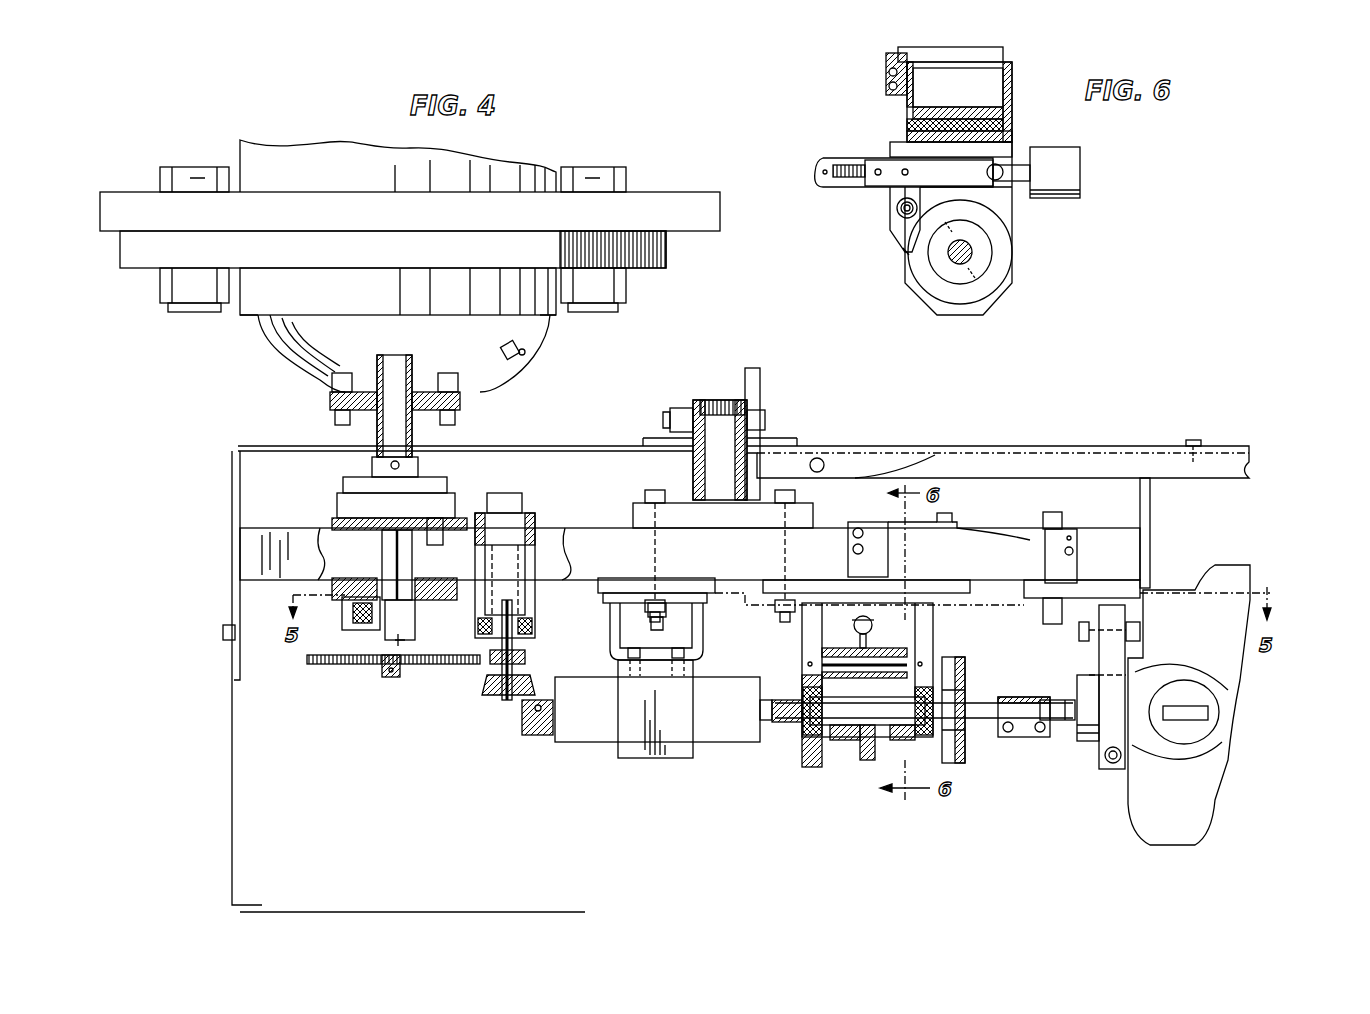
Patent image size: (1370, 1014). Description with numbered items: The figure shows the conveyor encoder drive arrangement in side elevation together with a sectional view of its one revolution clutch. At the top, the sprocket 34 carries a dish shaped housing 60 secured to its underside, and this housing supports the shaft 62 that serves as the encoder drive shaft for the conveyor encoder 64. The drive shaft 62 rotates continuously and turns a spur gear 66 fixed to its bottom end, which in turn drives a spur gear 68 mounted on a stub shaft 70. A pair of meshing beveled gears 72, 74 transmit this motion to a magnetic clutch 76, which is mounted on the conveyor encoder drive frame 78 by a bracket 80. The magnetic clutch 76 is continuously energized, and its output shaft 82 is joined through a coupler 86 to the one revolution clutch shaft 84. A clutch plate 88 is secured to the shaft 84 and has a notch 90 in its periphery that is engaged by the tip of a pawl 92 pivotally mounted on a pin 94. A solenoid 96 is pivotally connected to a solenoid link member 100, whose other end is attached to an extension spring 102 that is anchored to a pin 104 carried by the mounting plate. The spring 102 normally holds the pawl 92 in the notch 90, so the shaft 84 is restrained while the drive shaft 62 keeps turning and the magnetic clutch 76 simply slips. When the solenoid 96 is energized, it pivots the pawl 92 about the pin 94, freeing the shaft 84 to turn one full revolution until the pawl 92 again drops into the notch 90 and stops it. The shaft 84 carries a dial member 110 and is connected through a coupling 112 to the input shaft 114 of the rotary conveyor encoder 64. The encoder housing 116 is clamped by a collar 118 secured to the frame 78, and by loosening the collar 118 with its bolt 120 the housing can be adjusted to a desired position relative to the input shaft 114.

In FIG. 4, the sprocket 34 is at (640, 212).
In FIG. 4, the dish shaped housing 60 is at (488, 387).
In FIG. 4, the shaft 62 is at (395, 420).
In FIG. 4, the conveyor encoder 64 is at (1175, 610).
In FIG. 4, the spur gear 66 is at (450, 670).
In FIG. 4, the spur gear 68 is at (525, 662).
In FIG. 4, the stub shaft 70 is at (520, 650).
In FIG. 4, the beveled gear 72 is at (487, 690).
In FIG. 4, the beveled gear 74 is at (528, 740).
In FIG. 4, the magnetic clutch 76 is at (585, 728).
In FIG. 4, the conveyor encoder drive frame 78 is at (590, 540).
In FIG. 4, the bracket 80 is at (703, 631).
In FIG. 4, the output shaft 82 is at (770, 725).
In FIG. 4, the one revolution clutch shaft 84 is at (838, 725).
In FIG. 6, the one revolution clutch shaft 84 is at (972, 248).
In FIG. 4, the coupler 86 is at (795, 740).
In FIG. 4, the clutch plate 88 is at (862, 760).
In FIG. 6, the clutch plate 88 is at (1003, 263).
In FIG. 6, the notch 90 is at (904, 255).
In FIG. 6, the pawl 92 is at (897, 235).
In FIG. 4, the pin 94 is at (830, 662).
In FIG. 6, the pin 94 is at (898, 212).
In FIG. 4, the solenoid 96 is at (872, 622).
In FIG. 6, the solenoid 96 is at (1078, 165).
In FIG. 6, the solenoid link member 100 is at (963, 170).
In FIG. 6, the extension spring 102 is at (848, 165).
In FIG. 6, the pin 104 is at (818, 165).
In FIG. 4, the dial member 110 is at (958, 763).
In FIG. 4, the coupling 112 is at (1020, 697).
In FIG. 4, the input shaft 114 is at (1062, 722).
In FIG. 4, the housing 116 is at (1090, 742).
In FIG. 4, the collar 118 is at (1110, 690).
In FIG. 4, the bolt 120 is at (1113, 765).